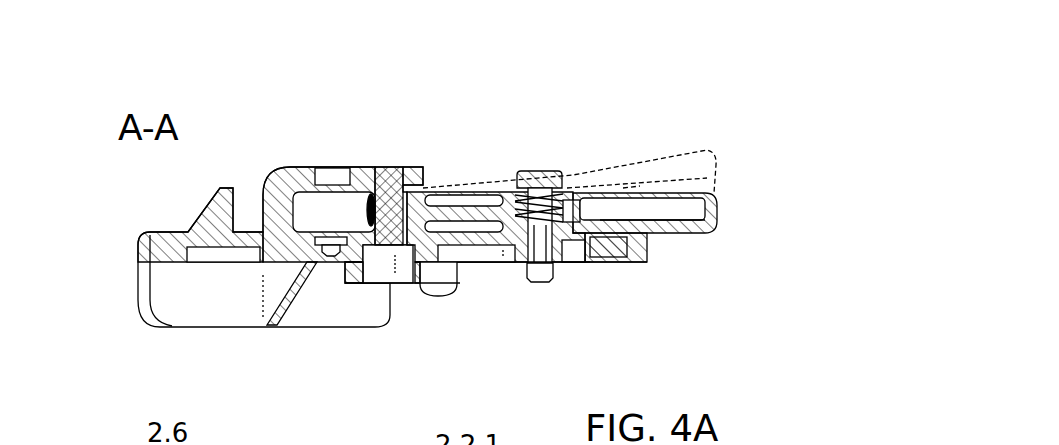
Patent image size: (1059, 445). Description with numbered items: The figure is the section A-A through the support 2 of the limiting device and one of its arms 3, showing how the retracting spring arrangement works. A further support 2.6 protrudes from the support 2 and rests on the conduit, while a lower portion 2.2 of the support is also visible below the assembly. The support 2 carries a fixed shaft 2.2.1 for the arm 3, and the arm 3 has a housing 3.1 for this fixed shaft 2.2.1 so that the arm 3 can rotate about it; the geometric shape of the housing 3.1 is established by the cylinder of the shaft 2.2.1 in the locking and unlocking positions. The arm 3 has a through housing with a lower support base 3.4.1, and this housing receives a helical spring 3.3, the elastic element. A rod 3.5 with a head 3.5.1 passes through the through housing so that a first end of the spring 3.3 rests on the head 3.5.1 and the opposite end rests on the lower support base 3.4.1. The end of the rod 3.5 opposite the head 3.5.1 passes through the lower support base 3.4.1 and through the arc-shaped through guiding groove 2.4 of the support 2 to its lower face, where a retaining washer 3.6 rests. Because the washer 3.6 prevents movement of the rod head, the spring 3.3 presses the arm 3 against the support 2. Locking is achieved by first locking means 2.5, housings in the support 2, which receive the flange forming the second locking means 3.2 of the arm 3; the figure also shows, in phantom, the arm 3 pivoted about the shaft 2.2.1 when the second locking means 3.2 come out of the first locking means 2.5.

The support 2 is at (650, 247).
The lower bracket 2.2 is at (408, 284).
The fixed shaft 2.2.1 is at (400, 167).
The through guiding groove 2.4 is at (579, 263).
The first locking means 2.5 is at (627, 262).
The support 2.6 is at (136, 283).
The arm 3 is at (657, 193).
The housing 3.1 is at (353, 188).
The second locking means 3.2 is at (641, 262).
The helical spring 3.3 is at (507, 183).
The lower support base 3.4.1 is at (570, 262).
The rod 3.5 is at (538, 282).
The head 3.5.1 is at (540, 171).
The retaining washer 3.6 is at (516, 265).